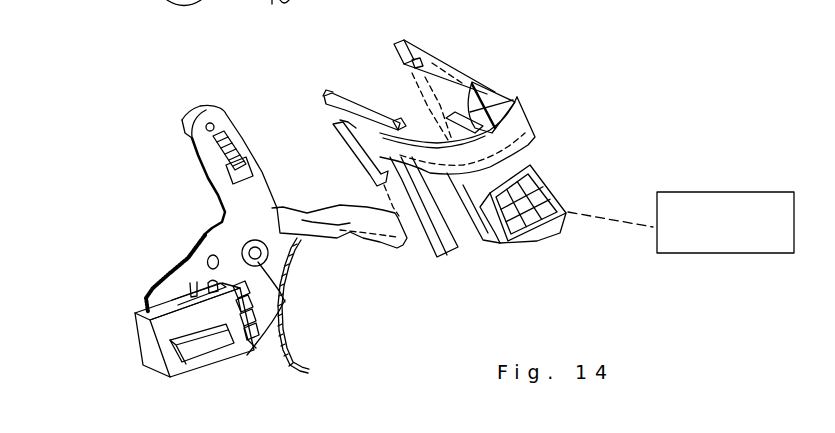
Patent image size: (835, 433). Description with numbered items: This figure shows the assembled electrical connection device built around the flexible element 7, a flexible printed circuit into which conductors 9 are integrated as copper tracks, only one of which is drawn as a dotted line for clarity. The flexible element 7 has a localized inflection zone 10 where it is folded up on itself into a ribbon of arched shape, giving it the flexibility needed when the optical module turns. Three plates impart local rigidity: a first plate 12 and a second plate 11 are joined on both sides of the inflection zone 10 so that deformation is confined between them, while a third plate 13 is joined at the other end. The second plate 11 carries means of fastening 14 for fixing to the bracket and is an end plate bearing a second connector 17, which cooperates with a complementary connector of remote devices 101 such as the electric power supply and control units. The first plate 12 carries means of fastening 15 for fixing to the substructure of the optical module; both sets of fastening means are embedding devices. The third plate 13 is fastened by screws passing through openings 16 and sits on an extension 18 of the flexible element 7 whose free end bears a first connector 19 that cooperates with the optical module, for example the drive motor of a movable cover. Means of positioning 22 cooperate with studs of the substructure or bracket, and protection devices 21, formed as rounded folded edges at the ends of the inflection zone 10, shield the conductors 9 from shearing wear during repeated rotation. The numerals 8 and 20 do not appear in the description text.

The flexible element 7 is at (130, 165).
The indicator element 8 is at (498, 82).
The conductors 9 is at (407, 242).
The inflection zone 10 is at (531, 144).
The second plate 11 is at (424, 55).
The first plate 12 is at (338, 95).
The third plate 13 is at (197, 111).
The means of fastening 14 is at (407, 63).
The means of fastening 15 is at (340, 120).
The openings 16 is at (307, 312).
The second connector 17 is at (498, 236).
The extension 18 is at (152, 310).
The first connector 19 is at (232, 363).
The second arm 20 is at (348, 267).
The protection devices 21 is at (398, 125).
The means of positioning 22 is at (192, 140).
The remote devices 101 is at (733, 192).